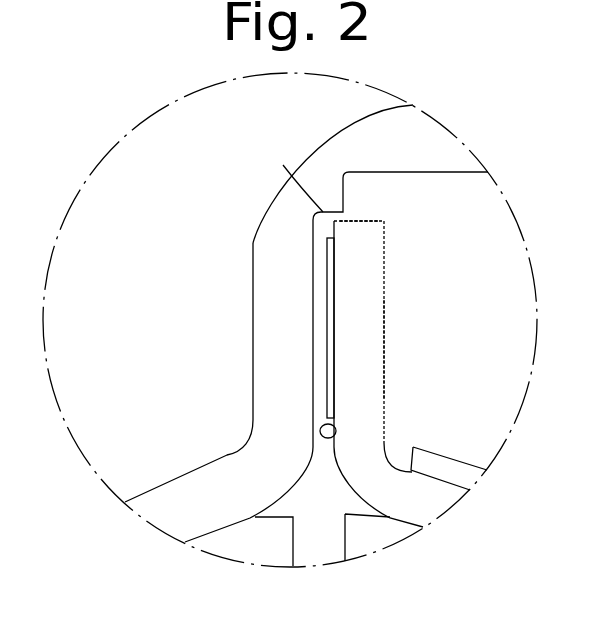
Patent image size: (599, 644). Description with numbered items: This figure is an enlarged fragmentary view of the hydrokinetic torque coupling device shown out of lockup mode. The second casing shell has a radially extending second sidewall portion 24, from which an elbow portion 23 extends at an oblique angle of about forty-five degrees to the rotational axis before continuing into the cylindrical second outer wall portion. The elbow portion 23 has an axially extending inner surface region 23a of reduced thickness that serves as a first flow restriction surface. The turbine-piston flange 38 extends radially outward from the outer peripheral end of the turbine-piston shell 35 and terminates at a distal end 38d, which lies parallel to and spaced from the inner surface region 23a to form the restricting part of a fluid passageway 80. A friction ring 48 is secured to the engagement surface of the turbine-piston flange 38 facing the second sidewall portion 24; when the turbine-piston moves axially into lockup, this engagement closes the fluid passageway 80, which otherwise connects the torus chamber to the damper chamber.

The elbow portion 23 is at (310, 167).
The inner surface region 23a is at (283, 165).
The second sidewall portion 24 is at (283, 367).
The turbine-piston shell 35 is at (420, 500).
The turbine-piston flange 38 is at (365, 305).
The distal end 38d is at (356, 224).
The friction ring 48 is at (328, 318).
The fluid passageway 80 is at (365, 203).